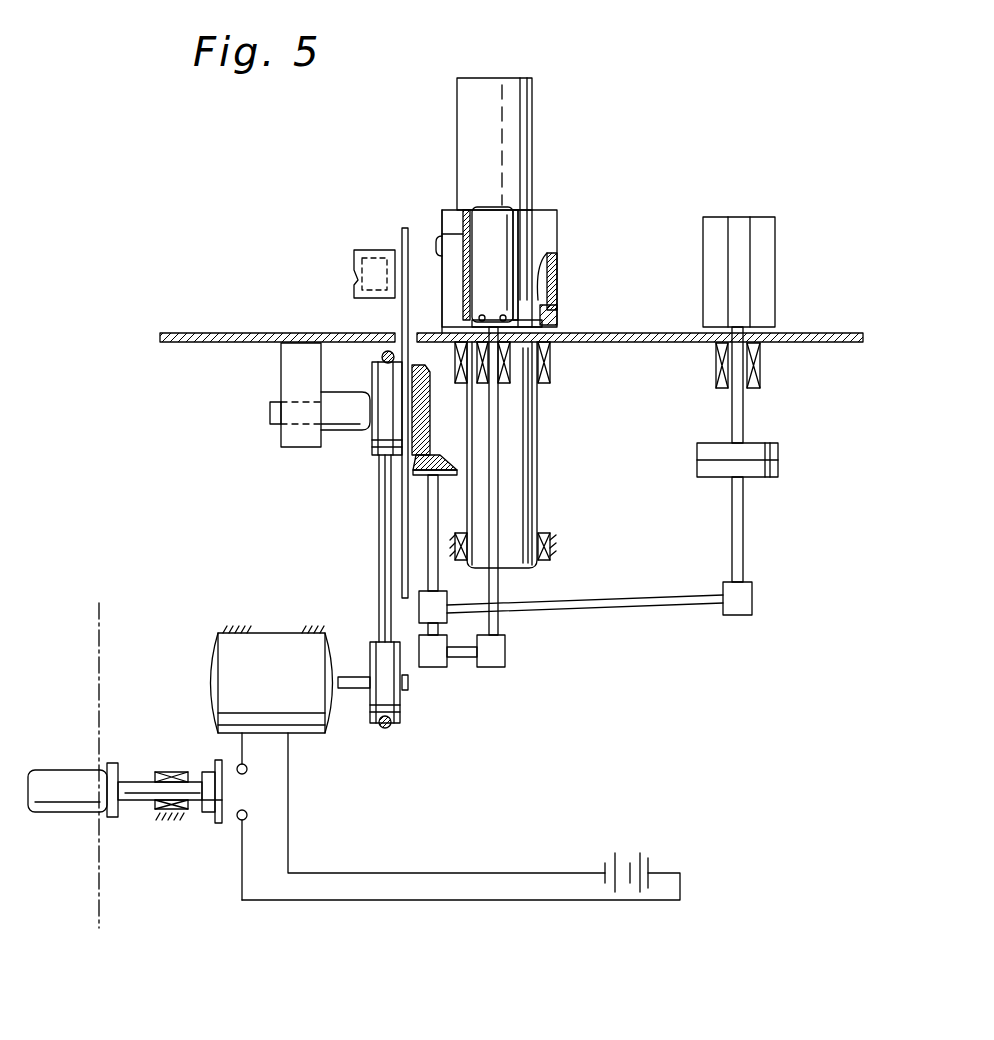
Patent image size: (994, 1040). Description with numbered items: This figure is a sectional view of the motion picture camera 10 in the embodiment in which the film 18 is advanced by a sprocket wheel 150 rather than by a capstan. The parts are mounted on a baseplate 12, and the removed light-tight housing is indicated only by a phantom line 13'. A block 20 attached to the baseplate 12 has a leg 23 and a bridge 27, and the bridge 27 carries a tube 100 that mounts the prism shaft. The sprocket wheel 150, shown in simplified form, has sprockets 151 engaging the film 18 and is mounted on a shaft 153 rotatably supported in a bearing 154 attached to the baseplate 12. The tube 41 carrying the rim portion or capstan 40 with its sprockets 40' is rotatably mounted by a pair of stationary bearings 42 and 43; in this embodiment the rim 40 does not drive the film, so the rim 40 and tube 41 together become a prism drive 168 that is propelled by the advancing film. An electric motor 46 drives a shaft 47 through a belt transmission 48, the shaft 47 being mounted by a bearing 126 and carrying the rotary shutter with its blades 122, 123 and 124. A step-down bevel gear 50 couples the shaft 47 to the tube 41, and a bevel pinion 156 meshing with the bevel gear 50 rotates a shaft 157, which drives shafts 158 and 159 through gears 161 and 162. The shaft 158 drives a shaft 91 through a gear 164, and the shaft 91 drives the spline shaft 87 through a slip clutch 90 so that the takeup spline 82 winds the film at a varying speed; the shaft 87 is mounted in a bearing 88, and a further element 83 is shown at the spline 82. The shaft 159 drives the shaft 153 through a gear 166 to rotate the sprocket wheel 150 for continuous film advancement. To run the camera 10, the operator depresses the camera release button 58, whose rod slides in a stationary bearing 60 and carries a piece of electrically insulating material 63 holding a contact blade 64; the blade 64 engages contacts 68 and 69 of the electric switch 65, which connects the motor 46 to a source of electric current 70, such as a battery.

The tube 100 is at (532, 110).
The bridge 27 is at (448, 207).
The block 20 is at (438, 208).
The leg 23 is at (438, 245).
The motion picture film 18 is at (558, 222).
The shutter blade 122 is at (400, 232).
The sprocket wheel 150 is at (508, 273).
The sprockets 151 is at (482, 318).
The baseplate 12 is at (210, 333).
The capstan 40 is at (576, 281).
The sprockets 40' is at (584, 313).
The spline 82 is at (776, 235).
The box wall 83 is at (745, 286).
The motion picture camera 10 is at (822, 331).
The bearing 126 is at (281, 378).
The stationary bearing 42 is at (551, 362).
The bearing 88 is at (761, 374).
The shaft 47 is at (270, 420).
The bearing 154 is at (525, 380).
The shaft 153 is at (498, 442).
The shaft 87 is at (744, 424).
The shutter blade 123 is at (398, 420).
The bevel pinion 156 is at (452, 468).
The tube 41 is at (538, 472).
The slip clutch 90 is at (778, 452).
The bevel gear 50 is at (420, 450).
The prism drive 168 is at (540, 500).
The shutter blade 124 is at (400, 505).
The shaft 157 is at (410, 548).
The shaft 91 is at (743, 548).
The belt transmission 48 is at (379, 590).
The stationary bearing 43 is at (540, 568).
The shaft 158 is at (598, 602).
The gear 161 is at (419, 608).
The gear 164 is at (752, 610).
The axis line 13' is at (71, 765).
The electric motor 46 is at (212, 672).
The gear 166 is at (505, 652).
The gear 162 is at (430, 668).
The shaft 159 is at (465, 658).
The camera release button 58 is at (86, 770).
The stationary bearing 60 is at (170, 772).
The contact blade 64 is at (222, 762).
The contact 68 is at (247, 768).
The electrically insulating material 63 is at (206, 822).
The contact 69 is at (247, 818).
The electric switch 65 is at (228, 836).
The source of electric current 70 is at (648, 866).